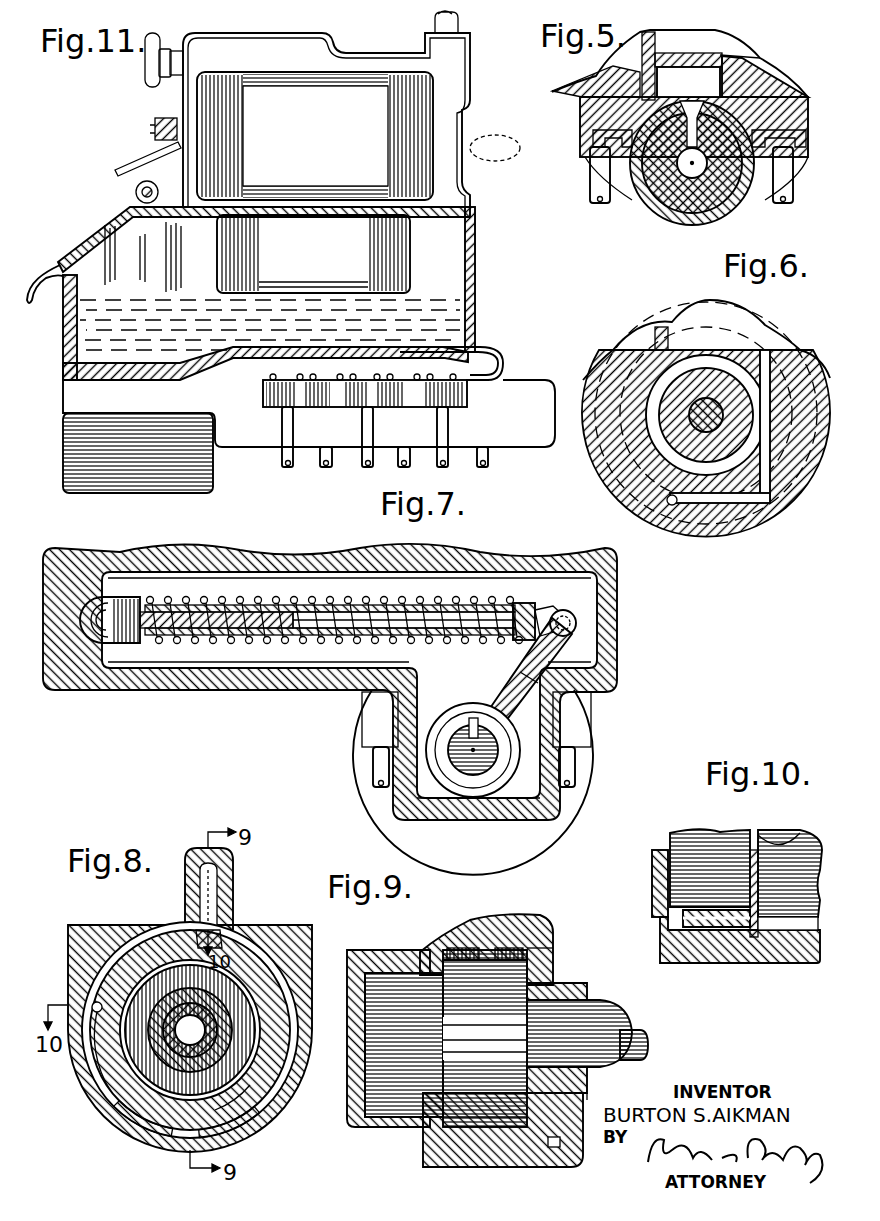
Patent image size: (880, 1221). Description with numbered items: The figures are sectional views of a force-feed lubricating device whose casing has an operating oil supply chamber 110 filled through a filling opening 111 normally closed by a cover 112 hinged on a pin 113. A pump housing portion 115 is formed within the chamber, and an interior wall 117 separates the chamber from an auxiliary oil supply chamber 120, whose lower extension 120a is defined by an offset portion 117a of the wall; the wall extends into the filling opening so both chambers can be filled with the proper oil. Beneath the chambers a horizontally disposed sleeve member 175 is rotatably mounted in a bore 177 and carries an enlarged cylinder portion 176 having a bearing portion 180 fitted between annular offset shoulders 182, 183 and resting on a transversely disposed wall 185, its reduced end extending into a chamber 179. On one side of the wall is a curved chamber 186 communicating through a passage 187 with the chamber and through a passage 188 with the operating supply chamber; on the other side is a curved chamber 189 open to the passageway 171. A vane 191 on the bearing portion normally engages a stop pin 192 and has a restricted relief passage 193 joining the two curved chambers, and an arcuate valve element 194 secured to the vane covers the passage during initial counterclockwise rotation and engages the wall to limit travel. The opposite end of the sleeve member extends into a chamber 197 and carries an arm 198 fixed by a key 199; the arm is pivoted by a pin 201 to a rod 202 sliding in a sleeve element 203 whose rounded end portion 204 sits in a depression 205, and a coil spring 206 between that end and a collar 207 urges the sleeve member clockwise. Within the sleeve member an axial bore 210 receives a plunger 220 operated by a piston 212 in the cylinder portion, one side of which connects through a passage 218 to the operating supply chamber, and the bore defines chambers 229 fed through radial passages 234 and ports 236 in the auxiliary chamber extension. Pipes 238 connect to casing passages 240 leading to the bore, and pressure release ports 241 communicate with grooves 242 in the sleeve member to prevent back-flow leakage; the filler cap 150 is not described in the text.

In FIG. 5, the operating oil supply chamber 110 is at (712, 56).
In FIG. 6, the operating oil supply chamber 110 is at (722, 350).
In FIG. 11, the filling opening 111 is at (107, 212).
In FIG. 11, the cover 112 is at (70, 248).
In FIG. 11, the pin 113 is at (147, 181).
In FIG. 11, the pump housing portion 115 is at (370, 261).
In FIG. 11, the interior wall 117 is at (105, 277).
In FIG. 5, the interior wall 117 is at (656, 42).
In FIG. 6, the interior wall 117 is at (652, 347).
In FIG. 5, the offset portion 117a is at (722, 62).
In FIG. 11, the auxiliary oil supply chamber 120 is at (447, 313).
In FIG. 5, the auxiliary oil supply chamber 120 is at (600, 80).
In FIG. 11, the lower extension 120a is at (475, 354).
In FIG. 5, the lower extension 120a is at (703, 82).
In FIG. 11, the filler cap 150 is at (452, 20).
In FIG. 8, the passageway 171 is at (236, 868).
In FIG. 5, the sleeve member 175 is at (693, 170).
In FIG. 6, the sleeve member 175 is at (692, 423).
In FIG. 7, the sleeve member 175 is at (497, 750).
In FIG. 8, the sleeve member 175 is at (277, 1097).
In FIG. 9, the sleeve member 175 is at (634, 1023).
In FIG. 9, the cylinder portion 176 is at (463, 1078).
In FIG. 5, the bore 177 is at (698, 170).
In FIG. 6, the bore 177 is at (688, 432).
In FIG. 9, the bore 177 is at (593, 1097).
In FIG. 9, the chamber 179 is at (357, 1127).
In FIG. 10, the chamber 179 is at (666, 872).
In FIG. 8, the bearing portion 180 is at (230, 1097).
In FIG. 9, the bearing portion 180 is at (483, 1080).
In FIG. 9, the annular offset shoulder 182 is at (437, 1077).
In FIG. 10, the annular offset shoulder 182 is at (676, 925).
In FIG. 9, the annular offset shoulder 183 is at (552, 1148).
In FIG. 8, the wall 185 is at (167, 1097).
In FIG. 9, the wall 185 is at (500, 1137).
In FIG. 6, the curved chamber 186 is at (667, 498).
In FIG. 8, the curved chamber 186 is at (127, 1093).
In FIG. 10, the curved chamber 186 is at (790, 932).
In FIG. 8, the passage 187 is at (96, 1013).
In FIG. 10, the passage 187 is at (717, 935).
In FIG. 6, the passage 188 is at (768, 503).
In FIG. 9, the passage 188 is at (583, 1155).
In FIG. 8, the curved chamber 189 is at (215, 940).
In FIG. 8, the vane 191 is at (163, 943).
In FIG. 9, the vane 191 is at (518, 950).
In FIG. 10, the vane 191 is at (793, 835).
In FIG. 8, the stop pin 192 is at (234, 902).
In FIG. 9, the stop pin 192 is at (550, 945).
In FIG. 8, the restricted relief passage 193 is at (123, 962).
In FIG. 9, the restricted relief passage 193 is at (478, 950).
In FIG. 8, the arcuate valve element 194 is at (66, 932).
In FIG. 9, the arcuate valve element 194 is at (425, 930).
In FIG. 10, the arcuate valve element 194 is at (733, 862).
In FIG. 7, the chamber 197 is at (520, 790).
In FIG. 7, the arm 198 is at (522, 688).
In FIG. 7, the key 199 is at (471, 718).
In FIG. 7, the pin 201 is at (574, 634).
In FIG. 7, the rod 202 is at (377, 617).
In FIG. 7, the sleeve element 203 is at (203, 643).
In FIG. 7, the rounded end portion 204 is at (95, 645).
In FIG. 7, the depression 205 is at (65, 592).
In FIG. 7, the coil spring 206 is at (357, 607).
In FIG. 7, the collar 207 is at (515, 603).
In FIG. 5, the axial bore 210 is at (715, 210).
In FIG. 8, the piston 212 is at (233, 1000).
In FIG. 6, the passage 218 is at (705, 347).
In FIG. 9, the passage 218 is at (548, 993).
In FIG. 6, the plunger 220 is at (672, 420).
In FIG. 8, the plunger 220 is at (190, 960).
In FIG. 9, the plunger 220 is at (648, 1045).
In FIG. 5, the chamber 229 is at (718, 228).
In FIG. 5, the radial passage 234 is at (800, 131).
In FIG. 5, the port 236 is at (712, 97).
In FIG. 11, the conduit or pipe 238 is at (292, 466).
In FIG. 5, the conduit or pipe 238 is at (787, 204).
In FIG. 7, the conduit or pipe 238 is at (568, 765).
In FIG. 5, the passage 240 is at (808, 157).
In FIG. 11, the pressure release port 241 is at (430, 380).
In FIG. 5, the pressure release port 241 is at (569, 116).
In FIG. 5, the groove 242 is at (585, 147).